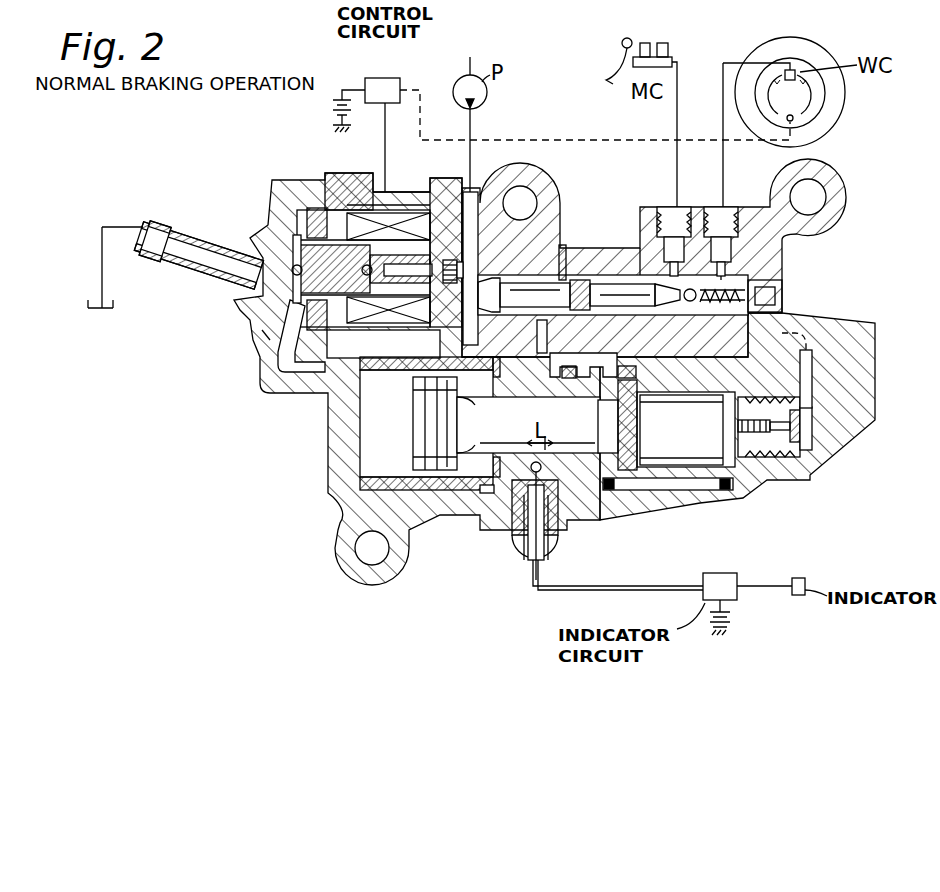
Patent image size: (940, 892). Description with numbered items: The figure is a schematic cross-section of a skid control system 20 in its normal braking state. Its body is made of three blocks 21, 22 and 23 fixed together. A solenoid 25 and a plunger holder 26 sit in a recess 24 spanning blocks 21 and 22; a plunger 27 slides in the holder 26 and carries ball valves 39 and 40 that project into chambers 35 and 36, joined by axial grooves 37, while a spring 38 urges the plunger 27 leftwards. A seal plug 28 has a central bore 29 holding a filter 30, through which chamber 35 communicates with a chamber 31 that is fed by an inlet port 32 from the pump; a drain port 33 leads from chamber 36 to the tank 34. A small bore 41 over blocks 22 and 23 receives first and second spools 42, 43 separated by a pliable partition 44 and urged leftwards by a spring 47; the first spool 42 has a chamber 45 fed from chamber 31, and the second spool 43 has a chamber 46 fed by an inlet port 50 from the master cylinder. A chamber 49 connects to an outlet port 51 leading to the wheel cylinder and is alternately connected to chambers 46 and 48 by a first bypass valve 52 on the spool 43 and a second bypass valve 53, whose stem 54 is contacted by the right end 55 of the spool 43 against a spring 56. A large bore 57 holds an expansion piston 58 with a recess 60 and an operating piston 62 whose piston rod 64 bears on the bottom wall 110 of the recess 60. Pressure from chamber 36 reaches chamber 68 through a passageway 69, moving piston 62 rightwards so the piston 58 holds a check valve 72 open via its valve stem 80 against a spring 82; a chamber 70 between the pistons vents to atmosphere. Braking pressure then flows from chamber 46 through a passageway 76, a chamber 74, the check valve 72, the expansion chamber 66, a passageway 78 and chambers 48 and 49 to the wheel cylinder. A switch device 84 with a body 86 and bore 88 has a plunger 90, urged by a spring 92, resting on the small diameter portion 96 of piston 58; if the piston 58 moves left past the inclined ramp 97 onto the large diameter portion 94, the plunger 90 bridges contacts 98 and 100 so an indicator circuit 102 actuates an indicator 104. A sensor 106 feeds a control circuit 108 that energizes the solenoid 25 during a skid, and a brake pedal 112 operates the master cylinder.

The skid control system 20 is at (242, 152).
The block 21 is at (260, 380).
The block 22 is at (535, 190).
The block 23 is at (875, 347).
The recess 24 is at (405, 213).
The solenoid 25 is at (350, 245).
The plunger holder 26 is at (315, 200).
The plunger 27 is at (290, 210).
The seal plug 28 is at (438, 215).
The central bore 29 is at (397, 300).
The filter 30 is at (447, 300).
The chamber 31 is at (520, 186).
The inlet port 32 is at (474, 192).
The drain port 33 is at (252, 240).
The tank 34 is at (113, 303).
The chamber 35 is at (373, 305).
The chamber 36 is at (265, 370).
The axial grooves 37 is at (320, 210).
The spring 38 is at (278, 335).
The ball valve 39 is at (382, 225).
The ball valve 40 is at (292, 306).
The bore 41 is at (595, 282).
The first spool 42 is at (545, 275).
The second spool 43 is at (636, 255).
The pliable partition 44 is at (565, 265).
The chamber 45 is at (476, 305).
The chamber 46 is at (708, 240).
The spring 47 is at (616, 320).
The chamber 48 is at (757, 312).
The chamber 49 is at (730, 310).
The inlet port 50 is at (651, 220).
The outlet port 51 is at (728, 240).
The first bypass valve 52 is at (677, 313).
The second bypass valve 53 is at (750, 293).
The stem 54 is at (748, 240).
The right end 55 is at (698, 303).
The spring 56 is at (765, 282).
The bore 57 is at (500, 362).
The expansion piston 58 is at (658, 445).
The recess 60 is at (537, 425).
The operating piston 62 is at (443, 487).
The piston rod 64 is at (501, 428).
The expansion chamber 66 is at (757, 490).
The chamber 68 is at (360, 435).
The passageway 69 is at (318, 380).
The chamber 70 is at (487, 495).
The check valve 72 is at (767, 460).
The chamber 74 is at (812, 420).
The passageway 76 is at (808, 360).
The passageway 78 is at (830, 388).
The valve stem 80 is at (735, 432).
The spring 82 is at (807, 460).
The switch device 84 is at (572, 536).
The body 86 is at (560, 545).
The bore 88 is at (500, 515).
The plunger 90 is at (512, 535).
The spring 92 is at (528, 545).
The large diameter portion 94 is at (680, 495).
The small diameter portion 96 is at (503, 357).
The inclined ramp 97 is at (532, 348).
The contact 98 is at (532, 565).
The contact 100 is at (540, 545).
The indicator circuit 102 is at (730, 577).
The indicator 104 is at (798, 578).
The sensor 106 is at (795, 118).
The control circuit 108 is at (378, 78).
The bottom wall 110 is at (637, 420).
The brake pedal 112 is at (612, 76).